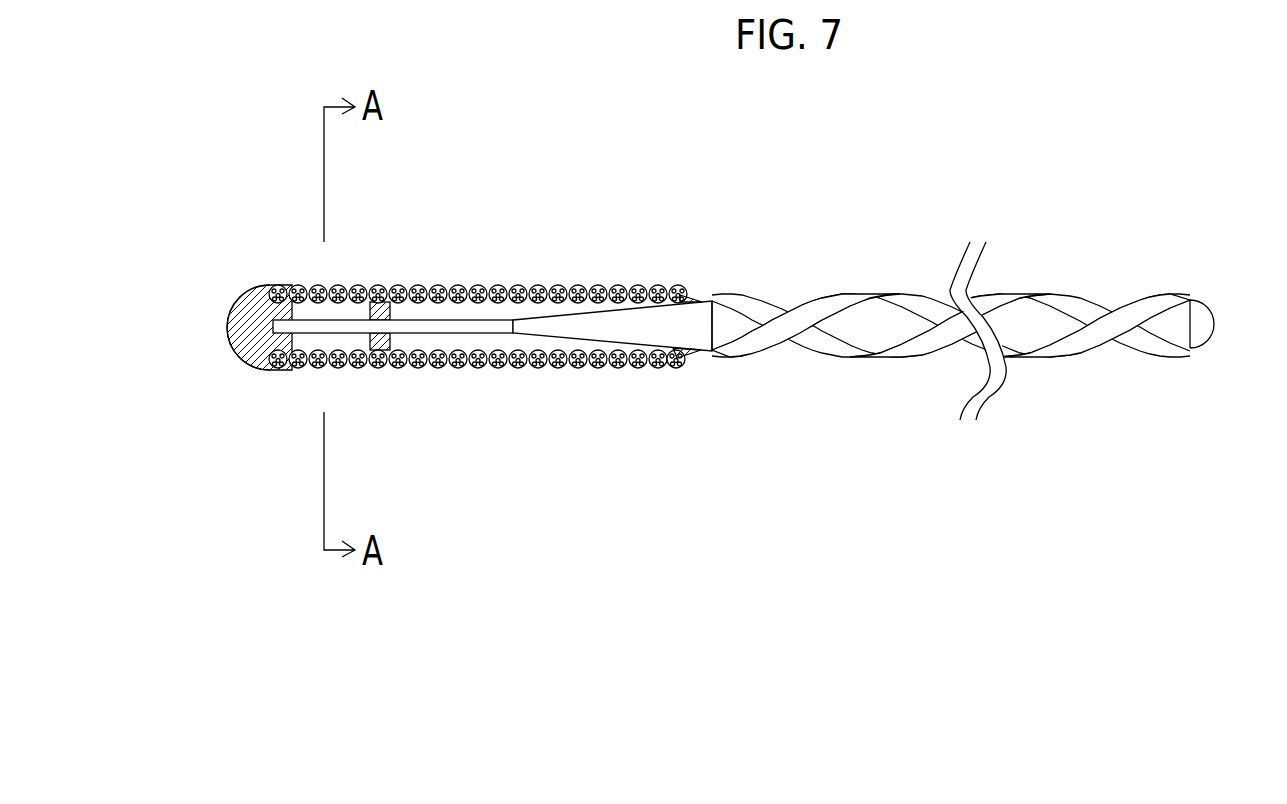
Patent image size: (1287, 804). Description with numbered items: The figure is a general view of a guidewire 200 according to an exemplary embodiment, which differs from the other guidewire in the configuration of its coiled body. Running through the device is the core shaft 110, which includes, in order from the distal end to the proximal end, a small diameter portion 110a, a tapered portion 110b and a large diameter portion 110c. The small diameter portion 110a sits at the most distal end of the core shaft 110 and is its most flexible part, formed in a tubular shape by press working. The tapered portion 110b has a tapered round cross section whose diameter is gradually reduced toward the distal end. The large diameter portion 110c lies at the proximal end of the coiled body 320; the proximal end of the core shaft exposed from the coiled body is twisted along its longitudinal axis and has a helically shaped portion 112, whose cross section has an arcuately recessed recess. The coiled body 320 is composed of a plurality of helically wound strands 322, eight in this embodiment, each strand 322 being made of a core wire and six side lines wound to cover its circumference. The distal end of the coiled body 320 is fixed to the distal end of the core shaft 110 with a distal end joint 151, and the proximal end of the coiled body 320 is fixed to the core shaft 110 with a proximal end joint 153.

The core shaft 110 is at (1155, 391).
The small diameter portion 110a is at (250, 371).
The tapered portion 110b is at (626, 328).
The large diameter portion 110c is at (863, 330).
The helically shaped portion 112 is at (1007, 406).
The distal end joint 151 is at (240, 283).
The proximal end joint 153 is at (690, 293).
The guidewire 200 is at (623, 226).
The coiled body 320 is at (416, 270).
The strand 322 is at (533, 367).